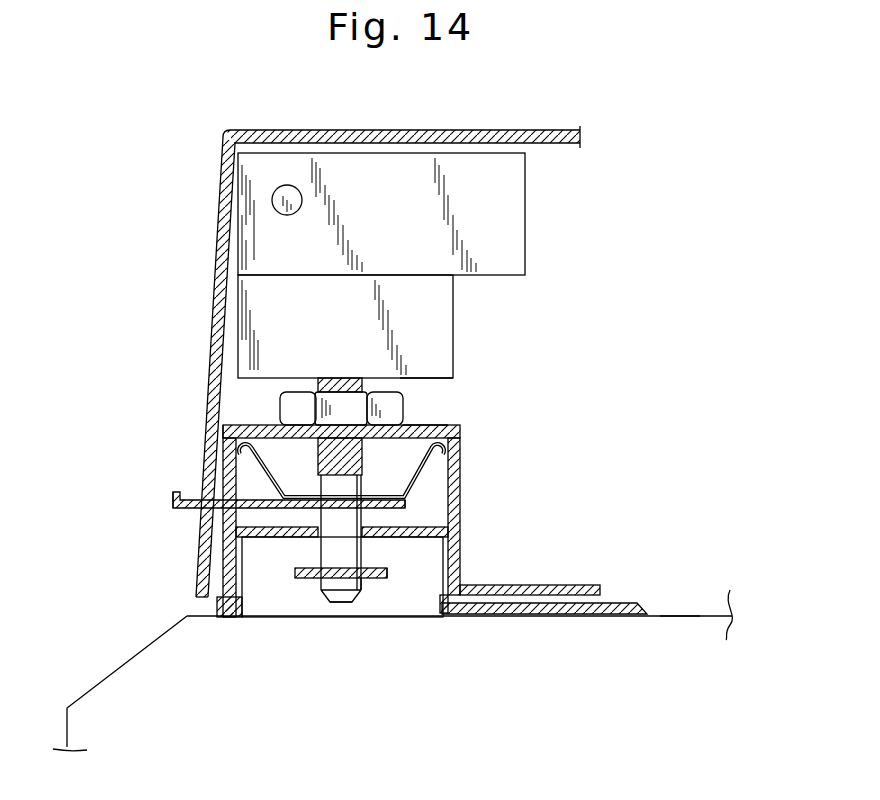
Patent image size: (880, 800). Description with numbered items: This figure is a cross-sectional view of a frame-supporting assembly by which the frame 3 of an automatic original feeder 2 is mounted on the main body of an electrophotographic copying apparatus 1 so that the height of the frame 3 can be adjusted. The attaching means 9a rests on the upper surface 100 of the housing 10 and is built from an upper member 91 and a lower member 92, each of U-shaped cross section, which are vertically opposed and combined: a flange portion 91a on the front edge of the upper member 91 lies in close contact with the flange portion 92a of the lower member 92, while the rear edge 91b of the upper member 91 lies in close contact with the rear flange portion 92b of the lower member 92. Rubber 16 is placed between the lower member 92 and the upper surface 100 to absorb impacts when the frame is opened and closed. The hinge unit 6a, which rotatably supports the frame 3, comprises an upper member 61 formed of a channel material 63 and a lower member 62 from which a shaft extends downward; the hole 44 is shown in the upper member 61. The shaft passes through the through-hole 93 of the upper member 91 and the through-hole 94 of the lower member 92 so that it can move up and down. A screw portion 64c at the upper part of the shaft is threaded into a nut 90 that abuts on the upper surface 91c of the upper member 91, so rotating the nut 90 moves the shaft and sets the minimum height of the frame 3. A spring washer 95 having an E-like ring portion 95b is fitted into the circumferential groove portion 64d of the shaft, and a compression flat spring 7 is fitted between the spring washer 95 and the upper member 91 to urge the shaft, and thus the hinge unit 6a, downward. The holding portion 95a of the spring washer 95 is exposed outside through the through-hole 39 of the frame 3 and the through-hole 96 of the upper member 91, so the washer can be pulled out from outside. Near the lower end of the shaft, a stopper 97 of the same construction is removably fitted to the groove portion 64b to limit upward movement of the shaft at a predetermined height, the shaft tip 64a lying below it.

The electrophotographic copying apparatus 1 is at (98, 677).
The automatic original feeder 2 is at (376, 109).
The frame 3 is at (452, 128).
The hinge unit 6a is at (535, 248).
The compression flat spring 7 is at (430, 476).
The attaching means 9a is at (247, 421).
The housing 10 is at (703, 623).
The rubber 16 is at (230, 618).
The through-hole 39 is at (205, 490).
The hole 44 is at (283, 188).
The upper member 61 is at (505, 200).
The lower member 62 is at (458, 327).
The channel material 63 is at (443, 360).
The bolt tip 64a is at (333, 601).
The groove portion 64b is at (372, 580).
The screw portion 64c is at (415, 428).
The circumferential groove portion 64d is at (372, 510).
The nut 90 is at (295, 388).
The upper member 91 is at (215, 473).
The flange portion 91a is at (515, 583).
The rear edge 91b is at (222, 587).
The upper surface 91c is at (270, 425).
The lower member 92 is at (203, 552).
The flange portion 92a is at (530, 614).
The flange portion 92b is at (217, 605).
The through-hole 93 is at (327, 453).
The through-hole 94 is at (330, 540).
The spring washer 95 is at (250, 478).
The holding portion 95a is at (172, 498).
The E-like ring portion 95b is at (408, 505).
The through-hole 96 is at (203, 522).
The stopper 97 is at (382, 578).
The upper surface 100 is at (672, 610).